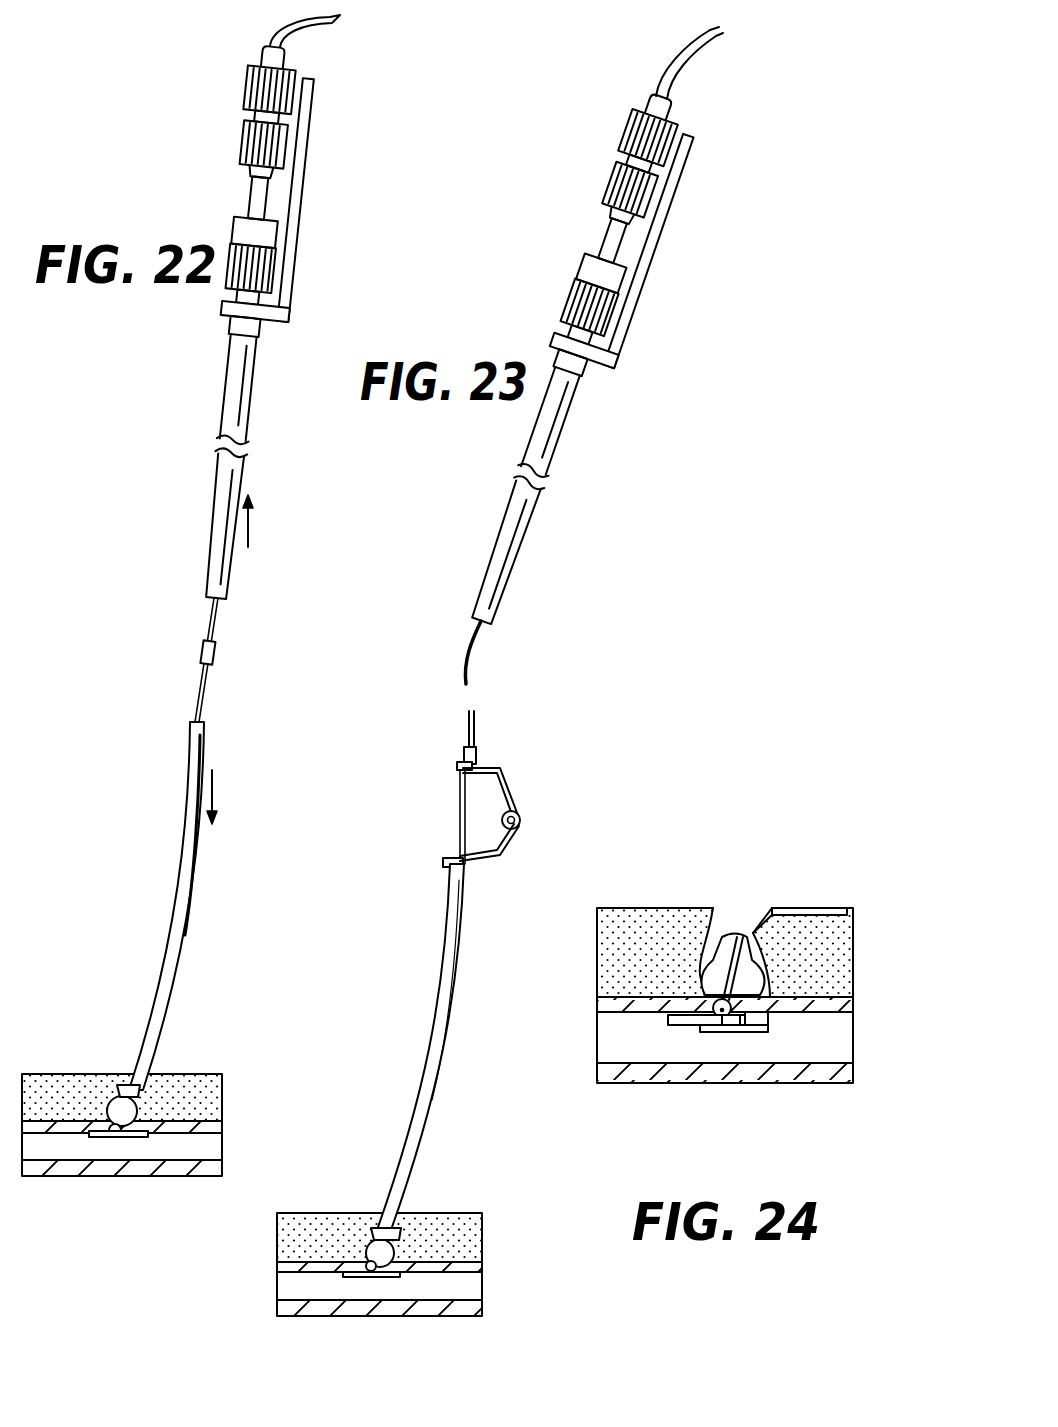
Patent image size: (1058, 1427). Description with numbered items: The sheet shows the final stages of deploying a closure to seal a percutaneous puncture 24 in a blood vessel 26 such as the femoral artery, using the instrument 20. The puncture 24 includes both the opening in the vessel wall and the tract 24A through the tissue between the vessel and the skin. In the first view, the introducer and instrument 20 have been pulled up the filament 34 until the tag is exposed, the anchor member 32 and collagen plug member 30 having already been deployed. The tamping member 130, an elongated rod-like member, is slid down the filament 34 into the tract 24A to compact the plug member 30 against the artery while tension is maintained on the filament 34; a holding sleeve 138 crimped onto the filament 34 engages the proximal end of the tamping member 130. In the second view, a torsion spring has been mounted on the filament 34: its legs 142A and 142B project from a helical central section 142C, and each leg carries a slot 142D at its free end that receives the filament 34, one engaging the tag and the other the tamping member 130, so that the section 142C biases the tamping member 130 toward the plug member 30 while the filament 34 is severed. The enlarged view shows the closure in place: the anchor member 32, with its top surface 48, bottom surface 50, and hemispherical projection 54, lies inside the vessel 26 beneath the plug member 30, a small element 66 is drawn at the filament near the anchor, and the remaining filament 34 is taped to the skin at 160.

In FIG. 22, the instrument 20 is at (240, 141).
In FIG. 23, the instrument 20 is at (596, 202).
In FIG. 22, the percutaneous puncture 24 is at (140, 1122).
In FIG. 23, the percutaneous puncture 24 is at (403, 1246).
In FIG. 24, the percutaneous puncture 24 is at (770, 993).
In FIG. 22, the tract 24A is at (118, 1096).
In FIG. 23, the tract 24A is at (376, 1240).
In FIG. 24, the tract 24A is at (727, 932).
In FIG. 22, the blood vessel 26 is at (190, 1130).
In FIG. 23, the blood vessel 26 is at (470, 1287).
In FIG. 24, the blood vessel 26 is at (847, 1070).
In FIG. 22, the plug member 30 is at (107, 1095).
In FIG. 23, the plug member 30 is at (368, 1240).
In FIG. 24, the plug member 30 is at (700, 972).
In FIG. 22, the anchor member 32 is at (107, 1140).
In FIG. 23, the anchor member 32 is at (343, 1276).
In FIG. 24, the anchor member 32 is at (672, 1025).
In FIG. 22, the filament 34 is at (334, 26).
In FIG. 23, the filament 34 is at (690, 73).
In FIG. 24, the filament 34 is at (710, 979).
In FIG. 24, the top surface 48 is at (750, 1025).
In FIG. 24, the bottom surface 50 is at (763, 1032).
In FIG. 24, the hemispherical projection 54 is at (733, 1025).
In FIG. 24, the knot / ball stop 66 is at (740, 938).
In FIG. 22, the tamping member 130 is at (183, 897).
In FIG. 23, the tamping member 130 is at (433, 1043).
In FIG. 22, the holding sleeve 138 is at (215, 653).
In FIG. 23, the holding sleeve 138 is at (466, 755).
In FIG. 23, the leg 142A is at (523, 822).
In FIG. 23, the leg 142B is at (504, 848).
In FIG. 23, the helical central section 142C is at (501, 780).
In FIG. 23, the slot 142D is at (458, 770).
In FIG. 24, the skin taping location 160 is at (791, 908).